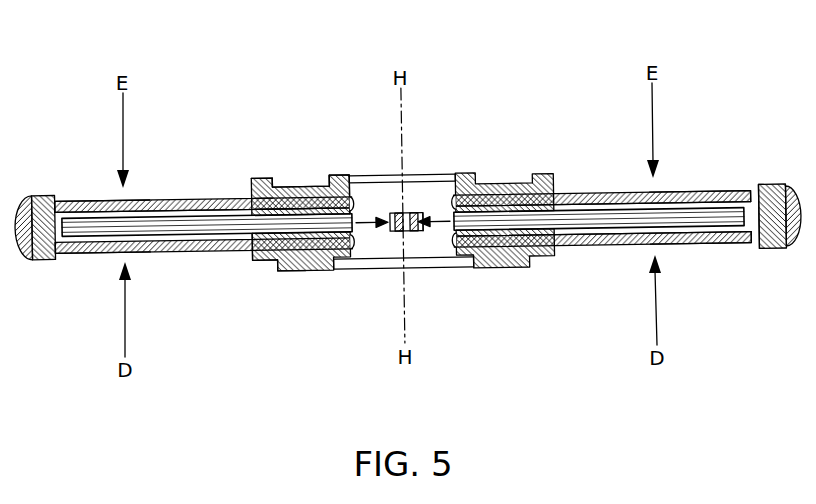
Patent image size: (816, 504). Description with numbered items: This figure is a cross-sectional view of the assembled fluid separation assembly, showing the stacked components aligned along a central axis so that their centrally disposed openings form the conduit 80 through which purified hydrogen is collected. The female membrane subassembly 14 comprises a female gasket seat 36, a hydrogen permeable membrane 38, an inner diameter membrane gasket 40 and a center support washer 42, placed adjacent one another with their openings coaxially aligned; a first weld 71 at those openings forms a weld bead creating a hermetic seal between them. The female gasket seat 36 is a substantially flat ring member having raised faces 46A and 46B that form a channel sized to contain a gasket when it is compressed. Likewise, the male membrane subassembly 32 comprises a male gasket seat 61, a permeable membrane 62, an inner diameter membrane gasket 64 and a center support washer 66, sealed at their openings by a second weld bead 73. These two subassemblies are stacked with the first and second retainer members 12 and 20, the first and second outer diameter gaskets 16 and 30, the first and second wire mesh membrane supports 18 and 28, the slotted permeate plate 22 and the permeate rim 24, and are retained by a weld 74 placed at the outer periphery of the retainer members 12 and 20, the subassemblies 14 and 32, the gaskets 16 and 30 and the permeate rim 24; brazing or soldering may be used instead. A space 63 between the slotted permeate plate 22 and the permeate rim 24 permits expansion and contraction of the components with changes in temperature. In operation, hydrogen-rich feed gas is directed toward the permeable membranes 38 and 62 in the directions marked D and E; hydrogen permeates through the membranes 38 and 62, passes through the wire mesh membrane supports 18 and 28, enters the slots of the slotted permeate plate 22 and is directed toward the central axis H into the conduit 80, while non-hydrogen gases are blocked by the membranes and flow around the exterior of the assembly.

The first retainer member 12 is at (765, 186).
The female permeable membrane subassembly 14 is at (203, 200).
The first outer diameter gasket 16 is at (747, 198).
The first wire mesh membrane support 18 is at (98, 207).
The second retainer member 20 is at (764, 188).
The slotted permeate plate 22 is at (605, 238).
The permeate rim 24 is at (785, 183).
The second wire mesh membrane support 28 is at (100, 247).
The second outer diameter gasket 30 is at (743, 242).
The male membrane subassembly 32 is at (212, 252).
The female gasket seat 36 is at (252, 187).
The hydrogen permeable membrane 38 is at (70, 200).
The inner diameter membrane gasket 40 is at (275, 190).
The center support washer 42 is at (302, 187).
The raised face 46A is at (258, 177).
The raised face 46B is at (332, 177).
The male gasket seat 61 is at (250, 260).
The permeable membrane 62 is at (70, 253).
The space 63 is at (52, 253).
The inner diameter membrane gasket 64 is at (277, 272).
The center support washer 66 is at (305, 273).
The first weld 71 is at (355, 195).
The second weld bead 73 is at (353, 241).
The weld 74 is at (30, 205).
The conduit 80 is at (420, 198).